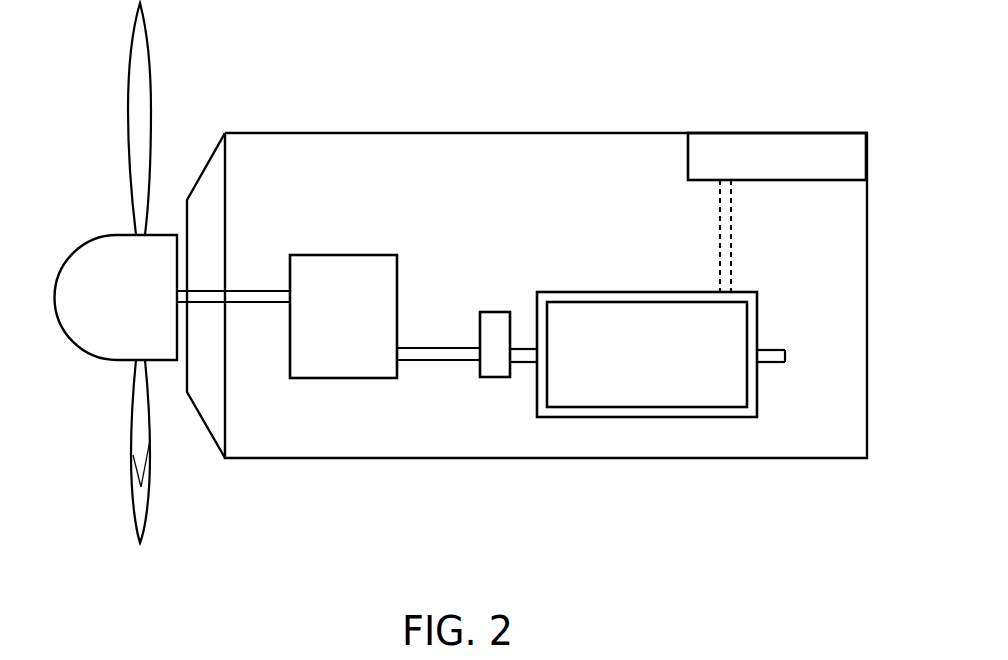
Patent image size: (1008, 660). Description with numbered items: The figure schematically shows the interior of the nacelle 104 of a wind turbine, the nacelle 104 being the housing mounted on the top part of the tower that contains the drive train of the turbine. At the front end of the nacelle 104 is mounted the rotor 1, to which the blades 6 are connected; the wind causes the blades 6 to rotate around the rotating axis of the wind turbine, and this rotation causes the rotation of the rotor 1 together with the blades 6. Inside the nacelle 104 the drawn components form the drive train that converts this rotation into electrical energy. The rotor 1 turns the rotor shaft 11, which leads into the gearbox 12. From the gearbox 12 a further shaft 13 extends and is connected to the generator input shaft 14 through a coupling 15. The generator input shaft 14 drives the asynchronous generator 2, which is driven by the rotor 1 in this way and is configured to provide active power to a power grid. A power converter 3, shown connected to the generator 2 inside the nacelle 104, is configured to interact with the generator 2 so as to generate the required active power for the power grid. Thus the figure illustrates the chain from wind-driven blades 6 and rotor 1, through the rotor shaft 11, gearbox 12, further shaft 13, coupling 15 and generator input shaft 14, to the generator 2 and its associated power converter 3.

The nacelle 104 is at (556, 126).
The rotor 1 is at (145, 265).
The blades 6 is at (137, 97).
The rotor shaft 11 is at (247, 290).
The gearbox 12 is at (330, 287).
The further shaft 13 is at (408, 350).
The coupling 15 is at (497, 323).
The generator input shaft 14 is at (525, 363).
The asynchronous generator 2 is at (633, 382).
The power converter 3 is at (758, 147).